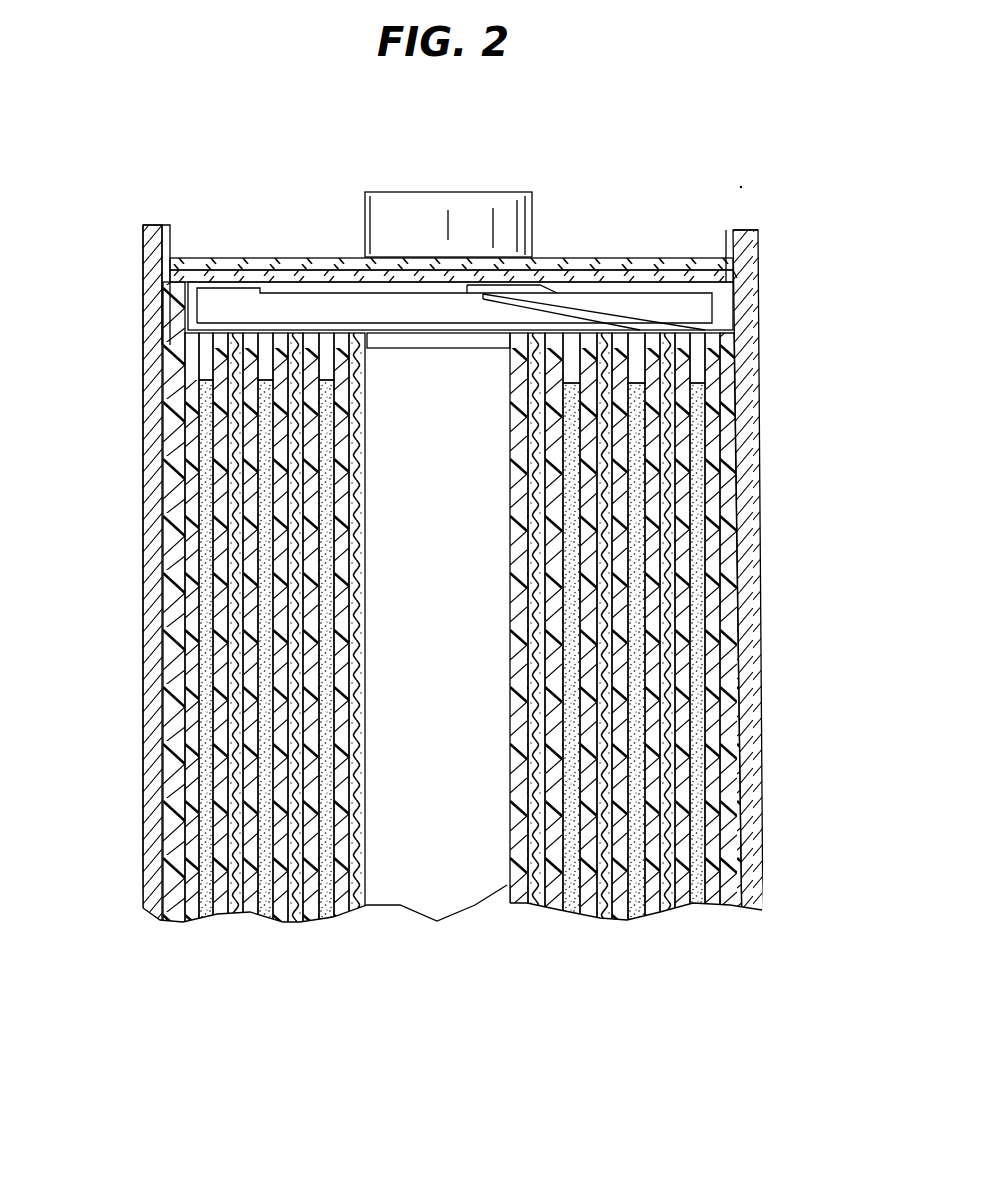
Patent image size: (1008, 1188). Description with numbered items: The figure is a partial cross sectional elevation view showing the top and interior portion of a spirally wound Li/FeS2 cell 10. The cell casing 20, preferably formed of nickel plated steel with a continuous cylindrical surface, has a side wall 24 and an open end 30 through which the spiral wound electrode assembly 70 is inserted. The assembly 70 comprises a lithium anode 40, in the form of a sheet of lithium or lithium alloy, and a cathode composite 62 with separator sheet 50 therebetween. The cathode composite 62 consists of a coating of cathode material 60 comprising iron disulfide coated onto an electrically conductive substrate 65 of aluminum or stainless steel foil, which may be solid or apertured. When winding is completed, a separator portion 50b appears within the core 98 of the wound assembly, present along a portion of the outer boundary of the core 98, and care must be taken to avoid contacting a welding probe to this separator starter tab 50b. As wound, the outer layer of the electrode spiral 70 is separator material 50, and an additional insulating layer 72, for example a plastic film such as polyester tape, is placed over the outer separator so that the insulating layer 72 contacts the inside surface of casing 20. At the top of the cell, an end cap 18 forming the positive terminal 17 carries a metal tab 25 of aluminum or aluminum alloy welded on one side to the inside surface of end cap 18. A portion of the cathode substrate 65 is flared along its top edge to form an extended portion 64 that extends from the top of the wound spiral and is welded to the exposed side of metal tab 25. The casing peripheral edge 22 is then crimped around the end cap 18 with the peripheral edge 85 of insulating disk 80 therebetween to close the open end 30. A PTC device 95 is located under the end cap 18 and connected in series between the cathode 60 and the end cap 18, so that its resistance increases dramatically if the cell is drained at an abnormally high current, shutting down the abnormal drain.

The wound cell 10 is at (768, 343).
The positive terminal 17 is at (457, 192).
The end cap 18 is at (296, 258).
The cell casing 20 is at (153, 330).
The casing peripheral edge 22 is at (144, 237).
The casing side wall 24 is at (143, 822).
The metal tab 25 is at (723, 290).
The open end 30 is at (172, 258).
The lithium anode 40 is at (193, 490).
The separator sheet 50 is at (218, 555).
The separator portion 50b is at (507, 885).
The cathode material 60 is at (670, 613).
The cathode composite 62 is at (227, 648).
The extended portion 64 is at (627, 320).
The substrate 65 is at (667, 636).
The spiral wound electrode assembly 70 is at (185, 772).
The insulating layer 72 is at (175, 435).
The insulating disk 80 is at (737, 278).
The peripheral edge of insulating disk 85 is at (172, 240).
The PTC device 95 is at (625, 290).
The core 98 is at (420, 898).